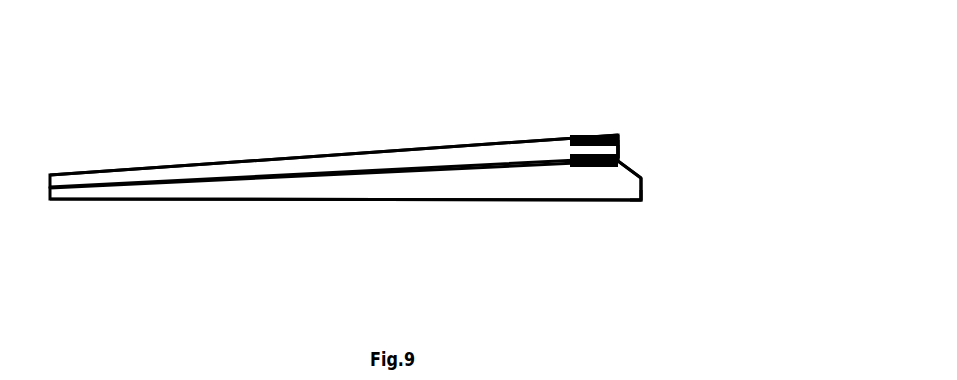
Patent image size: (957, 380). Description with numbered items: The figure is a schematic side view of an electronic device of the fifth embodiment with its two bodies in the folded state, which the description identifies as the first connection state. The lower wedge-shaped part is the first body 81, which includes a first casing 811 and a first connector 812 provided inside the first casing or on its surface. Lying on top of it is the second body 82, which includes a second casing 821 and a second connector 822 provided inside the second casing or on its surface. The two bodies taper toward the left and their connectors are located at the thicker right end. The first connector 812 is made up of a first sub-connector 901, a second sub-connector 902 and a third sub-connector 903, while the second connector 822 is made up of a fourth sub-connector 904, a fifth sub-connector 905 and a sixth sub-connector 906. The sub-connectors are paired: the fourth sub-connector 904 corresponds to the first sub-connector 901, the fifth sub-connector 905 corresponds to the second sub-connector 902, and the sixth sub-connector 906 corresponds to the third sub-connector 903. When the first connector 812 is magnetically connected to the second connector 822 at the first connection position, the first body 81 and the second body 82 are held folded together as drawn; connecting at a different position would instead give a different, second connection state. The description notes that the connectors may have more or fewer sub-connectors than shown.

The first body 81 is at (442, 193).
The first casing 811 is at (192, 198).
The first connector 812 is at (647, 202).
The second body 82 is at (470, 158).
The second casing 821 is at (120, 168).
The second connector 822 is at (620, 132).
The first sub-connector 901 is at (603, 167).
The second sub-connector 902 is at (645, 190).
The third sub-connector 903 is at (633, 165).
The fourth sub-connector 904 is at (577, 138).
The fifth sub-connector 905 is at (623, 145).
The sixth sub-connector 906 is at (702, 136).